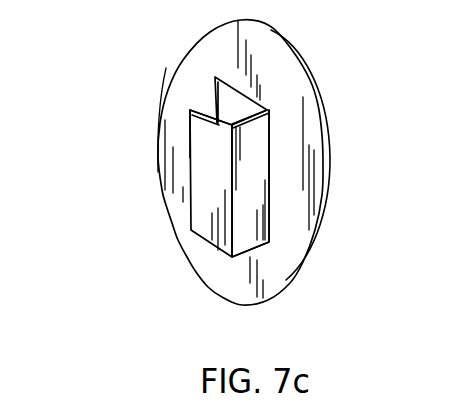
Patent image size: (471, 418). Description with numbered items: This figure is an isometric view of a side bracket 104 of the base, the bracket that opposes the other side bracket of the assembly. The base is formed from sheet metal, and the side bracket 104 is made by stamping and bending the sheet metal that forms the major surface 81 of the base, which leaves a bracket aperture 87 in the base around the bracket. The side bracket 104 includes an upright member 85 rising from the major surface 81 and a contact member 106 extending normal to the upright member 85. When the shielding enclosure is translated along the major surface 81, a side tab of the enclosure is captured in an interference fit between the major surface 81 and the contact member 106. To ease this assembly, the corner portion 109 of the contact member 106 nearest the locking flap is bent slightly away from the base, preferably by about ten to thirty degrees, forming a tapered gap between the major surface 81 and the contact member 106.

The side bracket 104 is at (155, 48).
The major surface 81 is at (287, 78).
The upright member 85 is at (257, 175).
The bracket aperture 87 is at (238, 99).
The contact member 106 is at (208, 193).
The corner portion 109 is at (198, 125).